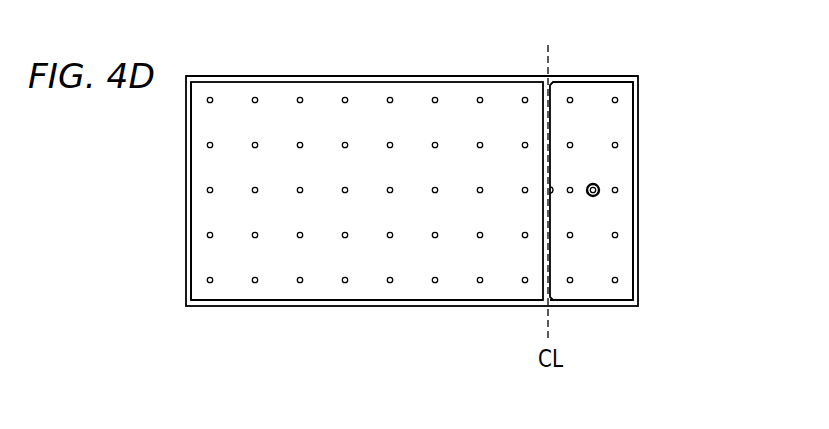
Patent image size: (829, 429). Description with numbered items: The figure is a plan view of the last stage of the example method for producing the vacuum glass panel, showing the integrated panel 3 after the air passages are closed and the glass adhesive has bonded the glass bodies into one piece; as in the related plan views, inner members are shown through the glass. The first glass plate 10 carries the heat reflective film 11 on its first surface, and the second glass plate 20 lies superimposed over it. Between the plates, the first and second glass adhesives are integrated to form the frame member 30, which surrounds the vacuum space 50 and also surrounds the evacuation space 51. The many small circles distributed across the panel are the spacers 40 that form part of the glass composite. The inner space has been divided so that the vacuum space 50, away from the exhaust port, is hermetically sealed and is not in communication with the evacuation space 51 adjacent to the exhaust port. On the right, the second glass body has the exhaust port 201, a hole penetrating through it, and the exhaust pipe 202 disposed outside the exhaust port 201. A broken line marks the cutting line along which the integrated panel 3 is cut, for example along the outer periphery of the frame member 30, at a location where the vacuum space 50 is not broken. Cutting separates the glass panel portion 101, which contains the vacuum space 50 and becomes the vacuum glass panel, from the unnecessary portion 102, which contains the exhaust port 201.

The integrated panel 3 is at (657, 67).
The first glass plate 10 is at (648, 191).
The heat reflective film 11 is at (330, 165).
The second glass plate 20 is at (617, 125).
The frame member 30 is at (470, 82).
The spacers 40 is at (299, 143).
The vacuum space 50 is at (462, 257).
The evacuation space 51 is at (585, 262).
The glass panel portion 101 is at (317, 307).
The unnecessary portion 102 is at (618, 307).
The exhaust port 201 is at (598, 187).
The exhaust pipe 202 is at (598, 194).